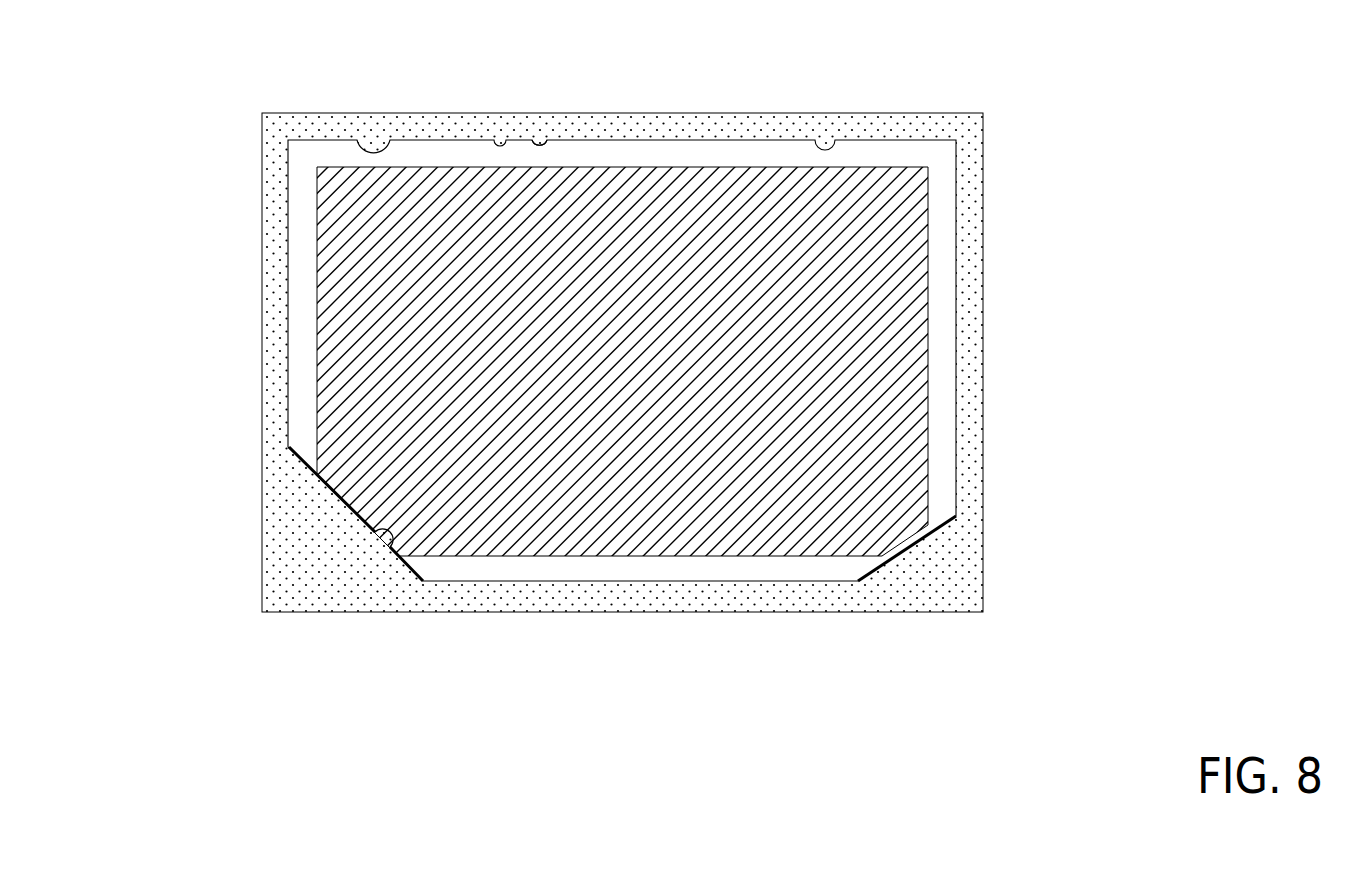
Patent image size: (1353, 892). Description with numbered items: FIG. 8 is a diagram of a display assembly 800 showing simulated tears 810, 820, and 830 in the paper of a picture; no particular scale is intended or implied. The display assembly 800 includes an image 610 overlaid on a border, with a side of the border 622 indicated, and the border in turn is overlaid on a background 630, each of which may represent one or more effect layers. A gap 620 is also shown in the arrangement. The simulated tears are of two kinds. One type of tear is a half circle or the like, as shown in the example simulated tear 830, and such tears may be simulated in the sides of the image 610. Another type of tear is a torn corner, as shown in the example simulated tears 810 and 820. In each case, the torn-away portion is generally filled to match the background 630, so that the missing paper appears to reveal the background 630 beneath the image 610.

The display assembly 800 is at (645, 704).
The image 610 is at (893, 389).
The gap 620 is at (942, 306).
The side of the border 622 is at (956, 263).
The background 630 is at (971, 222).
The simulated tear 810 is at (906, 550).
The simulated tear 820 is at (357, 515).
The simulated tear 830 is at (539, 128).